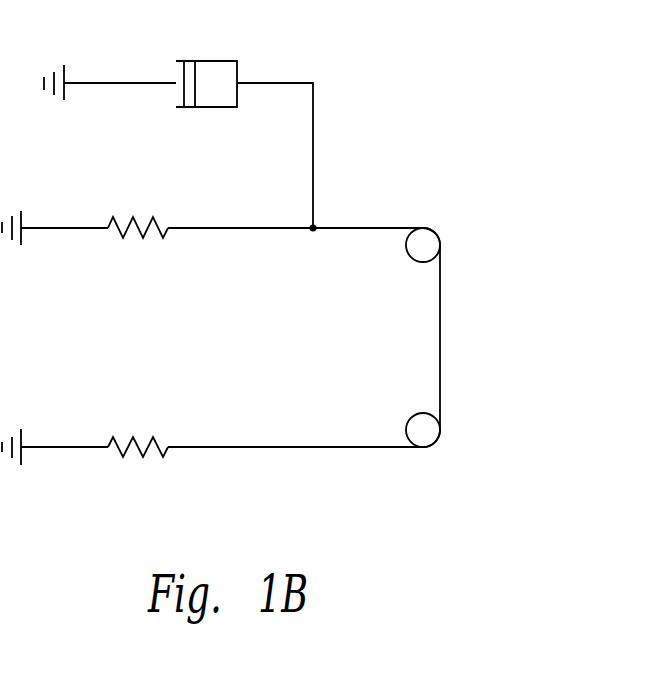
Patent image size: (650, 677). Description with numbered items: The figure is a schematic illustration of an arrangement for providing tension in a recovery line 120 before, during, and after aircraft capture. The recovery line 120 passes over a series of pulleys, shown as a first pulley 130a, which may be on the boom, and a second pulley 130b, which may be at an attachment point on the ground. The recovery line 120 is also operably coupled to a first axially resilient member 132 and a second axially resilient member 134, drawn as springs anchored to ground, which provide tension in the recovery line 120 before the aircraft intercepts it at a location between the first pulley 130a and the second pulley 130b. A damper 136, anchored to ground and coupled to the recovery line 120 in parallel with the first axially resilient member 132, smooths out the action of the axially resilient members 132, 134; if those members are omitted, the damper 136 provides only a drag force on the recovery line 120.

The recovery line 120 is at (441, 333).
The first pulley 130a is at (418, 262).
The second pulley 130b is at (412, 415).
The first axially resilient member 132 is at (138, 233).
The second axially resilient member 134 is at (157, 438).
The damper 136 is at (217, 60).